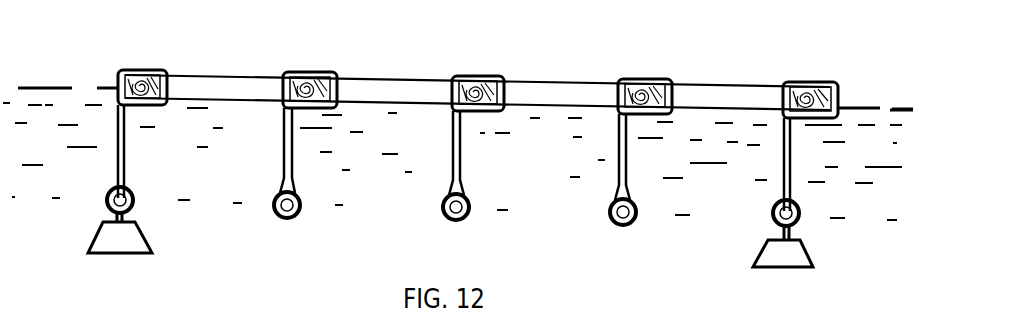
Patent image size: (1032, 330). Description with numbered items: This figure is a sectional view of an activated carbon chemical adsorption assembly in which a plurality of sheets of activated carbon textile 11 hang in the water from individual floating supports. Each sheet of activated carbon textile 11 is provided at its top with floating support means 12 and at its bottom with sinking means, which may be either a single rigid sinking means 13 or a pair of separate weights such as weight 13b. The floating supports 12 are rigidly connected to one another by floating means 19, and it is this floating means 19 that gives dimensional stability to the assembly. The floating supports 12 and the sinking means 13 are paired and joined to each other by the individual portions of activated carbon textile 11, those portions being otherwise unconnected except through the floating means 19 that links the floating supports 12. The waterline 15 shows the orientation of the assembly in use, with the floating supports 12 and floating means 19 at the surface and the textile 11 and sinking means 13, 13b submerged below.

The activated carbon textile 11 is at (283, 133).
The floating support means 12 is at (155, 75).
The sinking means 13 is at (440, 210).
The weight 13b is at (130, 253).
The waterline 15 is at (43, 88).
The floating means 19 is at (372, 78).